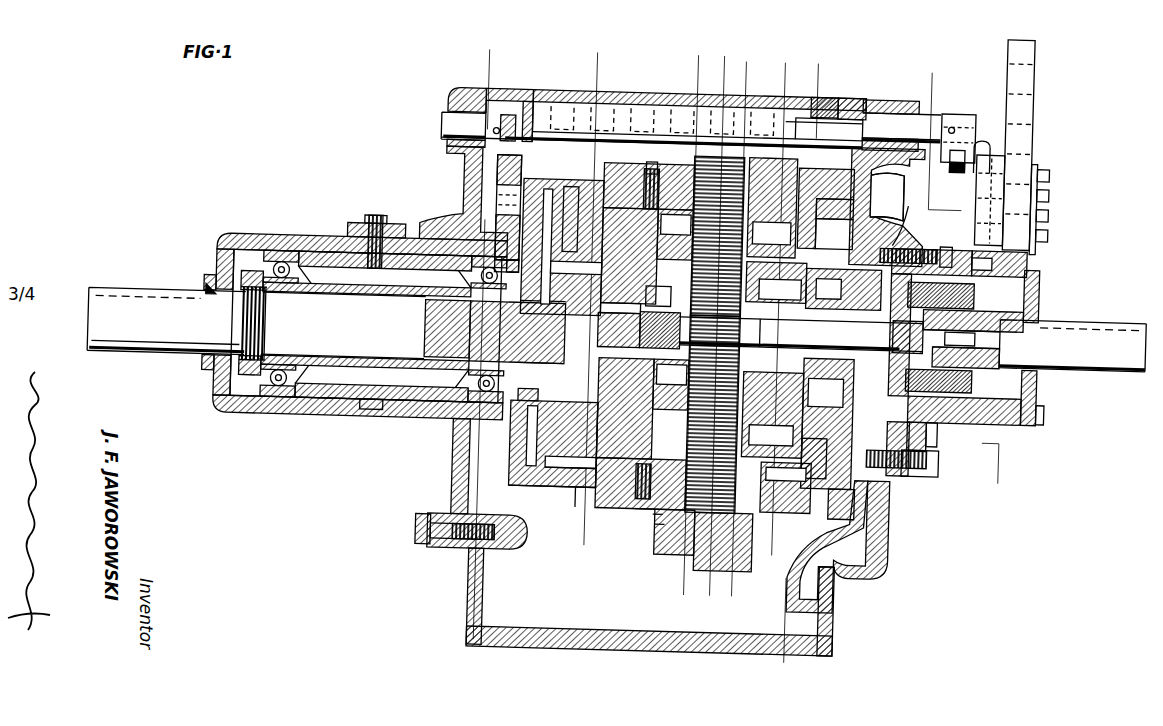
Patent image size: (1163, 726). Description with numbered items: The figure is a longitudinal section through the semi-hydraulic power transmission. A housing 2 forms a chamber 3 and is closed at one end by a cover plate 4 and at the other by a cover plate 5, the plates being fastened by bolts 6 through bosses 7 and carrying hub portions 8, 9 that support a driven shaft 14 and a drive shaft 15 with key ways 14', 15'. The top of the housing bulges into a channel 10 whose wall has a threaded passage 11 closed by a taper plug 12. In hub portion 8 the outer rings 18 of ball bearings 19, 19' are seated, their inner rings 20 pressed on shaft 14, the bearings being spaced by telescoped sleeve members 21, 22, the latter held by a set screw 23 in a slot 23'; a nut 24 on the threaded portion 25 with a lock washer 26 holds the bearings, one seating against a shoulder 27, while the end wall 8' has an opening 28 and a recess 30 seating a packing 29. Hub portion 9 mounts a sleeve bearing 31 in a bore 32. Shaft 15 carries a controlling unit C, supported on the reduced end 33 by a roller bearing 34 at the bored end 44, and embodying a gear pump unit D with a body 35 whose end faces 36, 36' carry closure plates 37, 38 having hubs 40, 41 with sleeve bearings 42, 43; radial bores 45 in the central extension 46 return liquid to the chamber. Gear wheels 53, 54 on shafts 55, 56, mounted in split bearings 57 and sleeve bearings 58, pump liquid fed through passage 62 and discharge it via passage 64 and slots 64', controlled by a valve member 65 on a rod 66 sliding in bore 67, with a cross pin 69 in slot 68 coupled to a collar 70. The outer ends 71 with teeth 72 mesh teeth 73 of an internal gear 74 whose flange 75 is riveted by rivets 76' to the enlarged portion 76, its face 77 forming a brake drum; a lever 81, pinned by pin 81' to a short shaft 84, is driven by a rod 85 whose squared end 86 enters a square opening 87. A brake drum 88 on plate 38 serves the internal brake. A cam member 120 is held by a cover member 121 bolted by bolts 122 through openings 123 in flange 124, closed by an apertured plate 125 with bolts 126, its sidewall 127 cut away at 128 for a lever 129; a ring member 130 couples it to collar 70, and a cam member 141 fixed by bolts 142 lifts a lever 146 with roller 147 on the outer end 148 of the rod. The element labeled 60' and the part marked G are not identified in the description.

The housing 2 is at (583, 632).
The chamber 3 is at (520, 650).
The cover plate 4 is at (456, 449).
The cover plate 5 is at (915, 462).
The bolts 6 is at (432, 523).
The bosses 7 is at (448, 540).
The hub portion 8 is at (503, 309).
The end wall 8' is at (190, 366).
The hub portion 9 is at (838, 270).
The longitudinal channel 10 is at (628, 88).
The threaded passage 11 is at (838, 82).
The taper plug 12 is at (810, 82).
The driven shaft 14 is at (165, 334).
The key way 14' is at (149, 278).
The drive shaft 15 is at (1072, 357).
The key way 15' is at (1090, 312).
The outer rings 18 is at (445, 410).
The ball bearing 19 is at (290, 381).
The ball bearing 19' is at (399, 384).
The inner rings 20 is at (490, 275).
The inner sleeve member 21 is at (358, 350).
The outer sleeve member 22 is at (340, 222).
The set screw 23 is at (375, 231).
The circumferential slot 23' is at (368, 423).
The nut 24 is at (240, 362).
The threaded portion 25 is at (242, 318).
The lock washer 26 is at (242, 270).
The circumferential shoulder 27 is at (425, 308).
The opening 28 is at (210, 288).
The packing 29 is at (216, 292).
The recess 30 is at (200, 342).
The sleeve bearing 31 is at (835, 390).
The longitudinal bore 32 is at (822, 272).
The reduced end 33 is at (552, 168).
The roller bearing 34 is at (610, 320).
The disk-shaped body 35 is at (690, 160).
The end face 36 is at (692, 540).
The end face 36' is at (816, 198).
The closure plate 37 is at (640, 497).
The closure plate 38 is at (789, 480).
The hub 40 is at (580, 460).
The hub 41 is at (830, 195).
The sleeve bearing 42 is at (670, 316).
The sleeve bearing 43 is at (800, 330).
The bored end 44 is at (660, 292).
The radial bores 45 is at (560, 318).
The bored central extension 46 is at (520, 435).
The gear wheel 53 is at (766, 235).
The gear wheel 54 is at (690, 411).
The shaft 55 is at (625, 470).
The shaft 56 is at (810, 440).
The split bearings 57 is at (640, 152).
The sleeve bearings 58 is at (760, 262).
The block 60' is at (772, 415).
The passage 62 is at (880, 545).
The valve controlled passage 64 is at (675, 234).
The passages 64' is at (668, 384).
The valve member 65 is at (640, 302).
The rod 66 is at (773, 328).
The reduced central bore 67 is at (975, 325).
The slot 68 is at (990, 290).
The cross pin 69 is at (893, 316).
The grooved collar 70 is at (935, 410).
The outer ends 71 is at (545, 475).
The teeth 72 is at (513, 452).
The teeth 73 is at (578, 480).
The flanged internal gear 74 is at (522, 472).
The flange 75 is at (495, 190).
The enlarged portion 76 is at (476, 331).
The rivets 76' is at (475, 243).
The peripheral outer face 77 is at (560, 480).
The lever 81 is at (509, 102).
The pin 81' is at (520, 101).
The short shaft 84 is at (440, 110).
The rod 85 is at (566, 100).
The squared end 86 is at (510, 110).
The square opening 87 is at (518, 90).
The brake drum 88 is at (882, 160).
The cam member 120 is at (1038, 248).
The cover member 121 is at (990, 401).
The bolts 122 is at (945, 450).
The openings 123 is at (912, 450).
The flange 124 is at (940, 440).
The apertured plate 125 is at (1038, 359).
The bolts 126 is at (1046, 392).
The cylindrical sidewall 127 is at (941, 436).
The cut away 128 is at (1000, 240).
The lever 129 is at (1027, 106).
The ring member 130 is at (1038, 264).
The cam member 141 is at (972, 177).
The bolts 142 is at (1046, 200).
The lever 146 is at (950, 92).
The roller 147 is at (978, 120).
The outer end 148 is at (885, 100).
The bracket G is at (445, 152).
The controlling unit C is at (655, 500).
The gear pump unit D is at (660, 512).